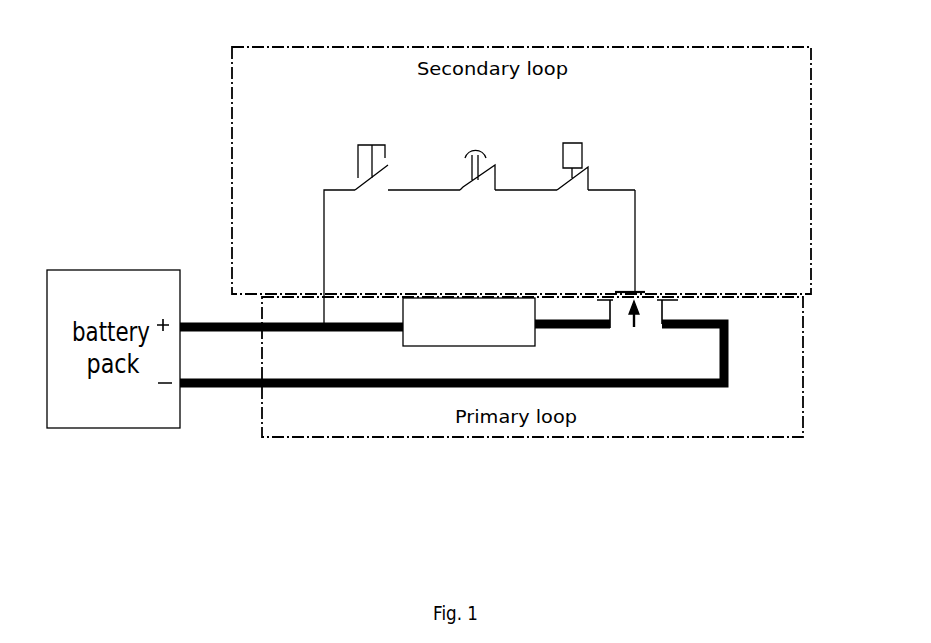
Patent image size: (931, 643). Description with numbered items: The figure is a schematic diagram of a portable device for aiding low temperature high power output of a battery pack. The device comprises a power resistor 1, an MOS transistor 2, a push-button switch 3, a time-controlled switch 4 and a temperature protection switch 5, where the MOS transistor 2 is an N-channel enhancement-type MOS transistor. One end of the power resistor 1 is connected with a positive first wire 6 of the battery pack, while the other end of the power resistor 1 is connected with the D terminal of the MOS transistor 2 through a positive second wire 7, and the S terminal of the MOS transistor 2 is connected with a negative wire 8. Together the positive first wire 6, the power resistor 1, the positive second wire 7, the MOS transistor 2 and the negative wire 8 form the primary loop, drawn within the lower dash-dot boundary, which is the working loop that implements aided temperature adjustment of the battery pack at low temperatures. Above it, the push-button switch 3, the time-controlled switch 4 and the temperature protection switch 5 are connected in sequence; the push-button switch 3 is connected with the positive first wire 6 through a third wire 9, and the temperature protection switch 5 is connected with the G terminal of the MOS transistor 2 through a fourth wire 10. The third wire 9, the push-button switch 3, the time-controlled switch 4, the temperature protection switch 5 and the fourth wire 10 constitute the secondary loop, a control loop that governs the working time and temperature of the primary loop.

The power resistor 1 is at (460, 327).
The MOS transistor 2 is at (640, 325).
The push-button switch 3 is at (363, 178).
The time-controlled switch 4 is at (469, 176).
The temperature protection switch 5 is at (562, 179).
The positive first wire 6 is at (308, 325).
The positive second wire 7 is at (573, 325).
The negative wire 8 is at (697, 387).
The third wire 9 is at (324, 258).
The fourth wire 10 is at (635, 243).